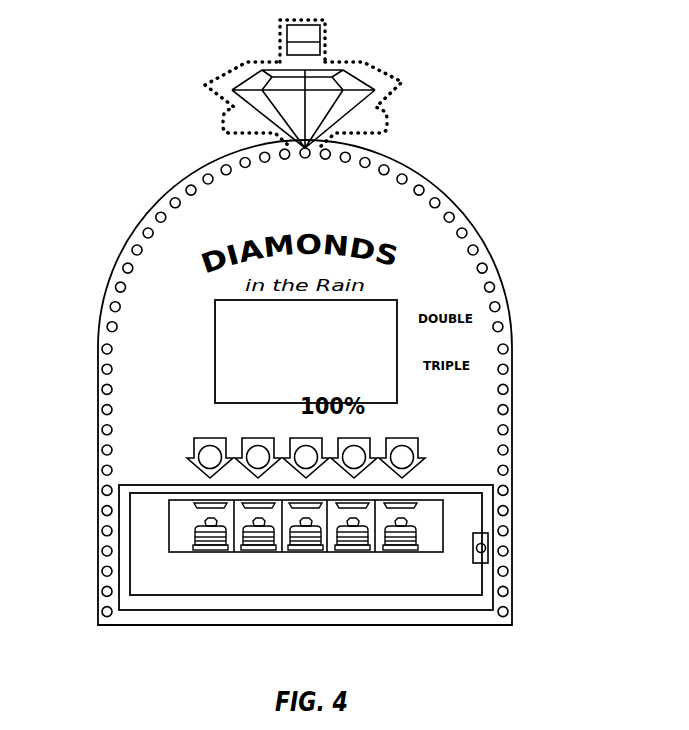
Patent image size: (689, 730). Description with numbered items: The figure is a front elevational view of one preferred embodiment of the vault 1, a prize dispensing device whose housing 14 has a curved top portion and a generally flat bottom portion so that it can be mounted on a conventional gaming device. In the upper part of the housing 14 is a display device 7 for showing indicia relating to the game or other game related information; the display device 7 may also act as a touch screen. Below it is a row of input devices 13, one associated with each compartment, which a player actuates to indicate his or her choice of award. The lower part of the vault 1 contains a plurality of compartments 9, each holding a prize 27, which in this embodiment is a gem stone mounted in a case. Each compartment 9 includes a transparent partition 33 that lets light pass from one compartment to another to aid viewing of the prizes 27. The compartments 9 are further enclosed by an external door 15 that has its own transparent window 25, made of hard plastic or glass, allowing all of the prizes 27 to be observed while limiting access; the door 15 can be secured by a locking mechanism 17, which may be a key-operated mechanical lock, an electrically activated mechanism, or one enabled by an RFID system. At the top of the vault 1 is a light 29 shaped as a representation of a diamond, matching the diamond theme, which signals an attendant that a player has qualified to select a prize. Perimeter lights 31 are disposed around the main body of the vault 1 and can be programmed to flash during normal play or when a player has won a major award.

The vault 1 is at (470, 220).
The display device 7 is at (237, 347).
The compartments 9 is at (438, 534).
The input device 13 is at (410, 453).
The housing 14 is at (513, 384).
The door 15 is at (468, 577).
The locking mechanism 17 is at (489, 553).
The transparent window 25 is at (168, 518).
The prize 27 is at (303, 537).
The light 29 is at (353, 63).
The perimeter lights 31 is at (508, 327).
The transparent partition 33 is at (330, 517).